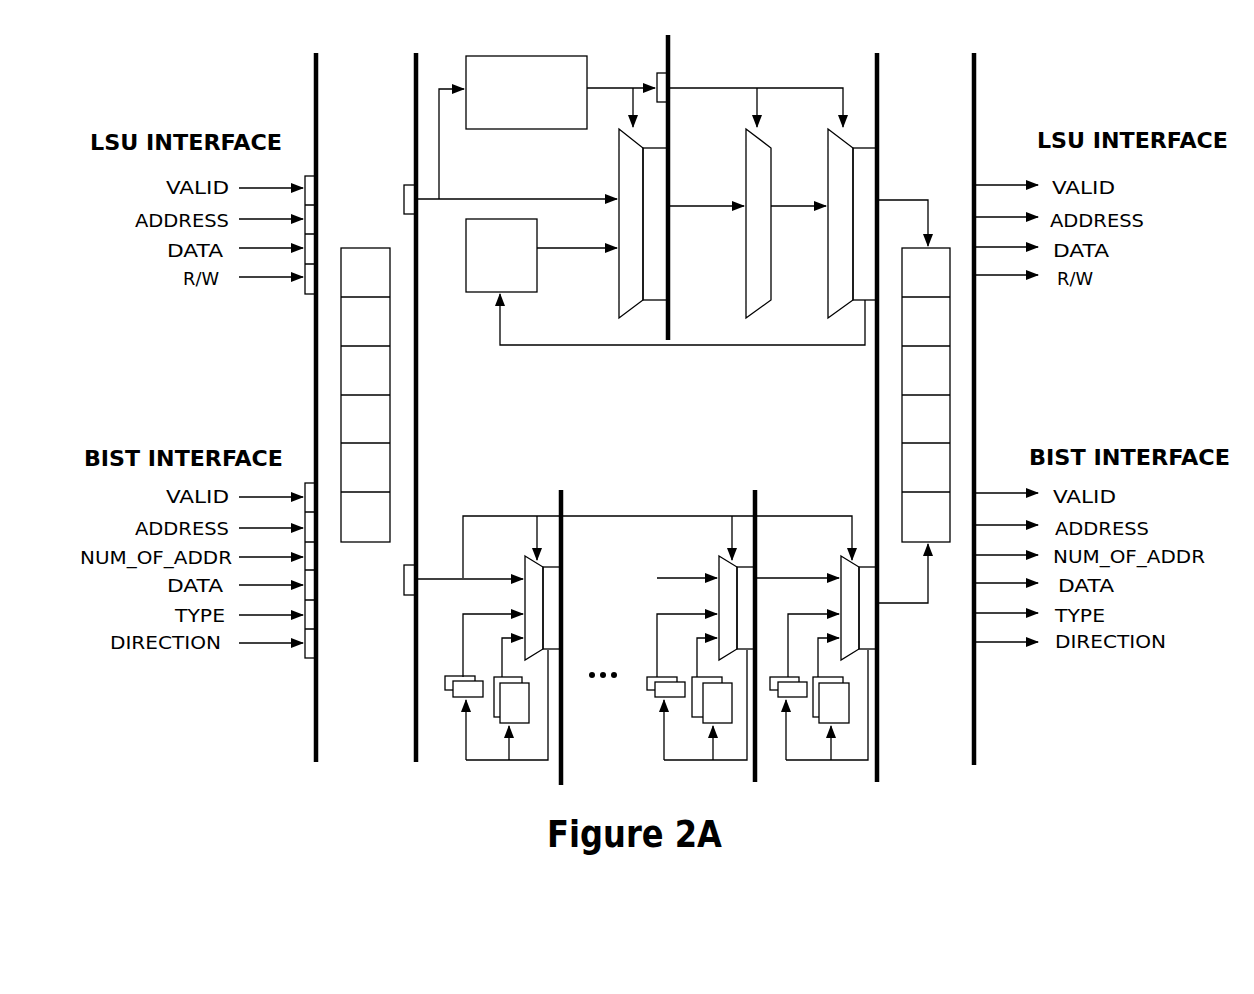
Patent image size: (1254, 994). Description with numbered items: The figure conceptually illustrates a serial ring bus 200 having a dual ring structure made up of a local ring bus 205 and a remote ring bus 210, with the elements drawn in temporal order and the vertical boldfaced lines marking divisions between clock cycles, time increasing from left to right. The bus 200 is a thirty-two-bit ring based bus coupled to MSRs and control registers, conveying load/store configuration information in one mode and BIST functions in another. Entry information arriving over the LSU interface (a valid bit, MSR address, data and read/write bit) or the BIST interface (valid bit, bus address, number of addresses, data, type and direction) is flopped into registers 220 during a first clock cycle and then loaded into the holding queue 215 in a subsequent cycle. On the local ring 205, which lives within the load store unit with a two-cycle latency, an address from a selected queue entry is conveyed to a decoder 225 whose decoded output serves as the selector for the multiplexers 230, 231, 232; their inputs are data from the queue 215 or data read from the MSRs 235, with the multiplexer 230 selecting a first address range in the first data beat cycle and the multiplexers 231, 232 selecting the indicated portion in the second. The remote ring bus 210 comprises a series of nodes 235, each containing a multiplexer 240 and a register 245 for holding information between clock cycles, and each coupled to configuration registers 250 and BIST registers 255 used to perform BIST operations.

The serial ring bus 200 is at (1112, 81).
The local ring bus 205 is at (698, 366).
The remote ring bus 210 is at (600, 465).
The holding queue 215 is at (341, 384).
The registers 220 is at (318, 186).
The decoder 225 is at (526, 92).
The multiplexer 230 is at (628, 322).
The multiplexer 231 is at (744, 283).
The multiplexer 232 is at (828, 297).
The MSRs / nodes 235 is at (406, 808).
The multiplexer 240 is at (525, 567).
The register 245 is at (562, 580).
The registers 250 is at (445, 686).
The BIST registers 255 is at (529, 702).